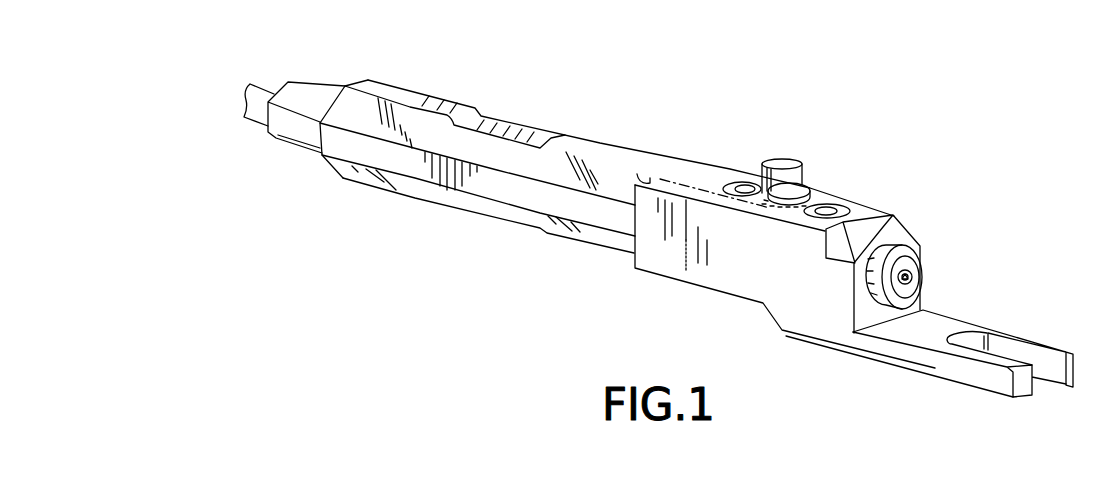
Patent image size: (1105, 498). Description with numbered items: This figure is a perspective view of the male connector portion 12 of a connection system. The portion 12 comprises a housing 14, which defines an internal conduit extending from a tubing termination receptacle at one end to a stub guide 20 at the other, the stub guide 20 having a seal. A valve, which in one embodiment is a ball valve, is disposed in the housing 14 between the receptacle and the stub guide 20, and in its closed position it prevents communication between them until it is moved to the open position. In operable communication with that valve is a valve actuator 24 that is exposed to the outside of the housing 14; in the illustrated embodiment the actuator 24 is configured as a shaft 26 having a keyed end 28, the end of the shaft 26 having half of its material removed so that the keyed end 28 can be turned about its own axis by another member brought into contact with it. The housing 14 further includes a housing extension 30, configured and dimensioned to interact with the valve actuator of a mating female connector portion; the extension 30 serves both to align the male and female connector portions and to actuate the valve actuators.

The male connector portion 12 is at (696, 229).
The housing 14 is at (678, 178).
The stub guide 20 is at (888, 252).
The valve actuator 24 is at (790, 157).
The shaft 26 is at (782, 200).
The keyed end 28 is at (793, 173).
The housing extension 30 is at (943, 328).